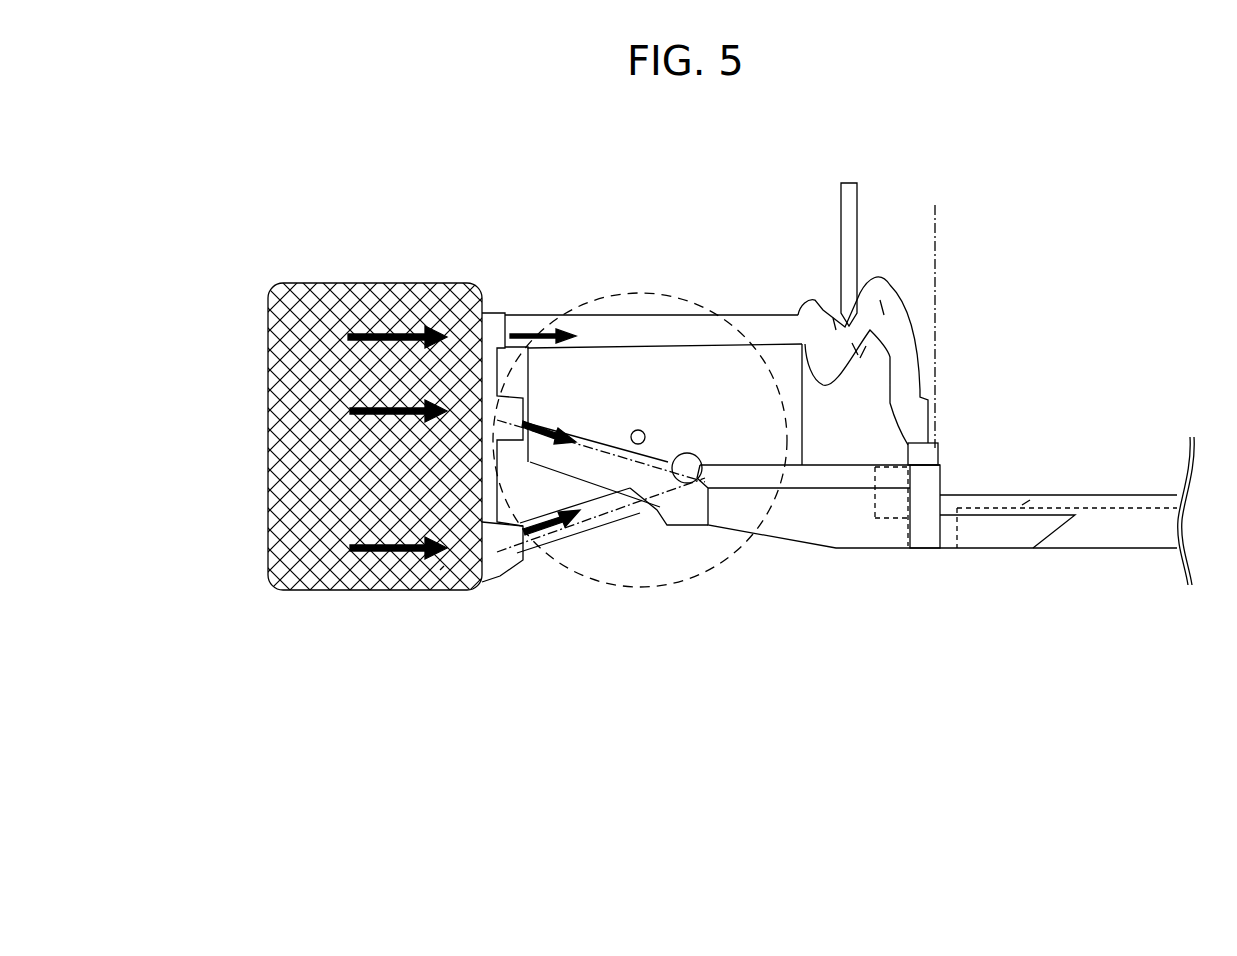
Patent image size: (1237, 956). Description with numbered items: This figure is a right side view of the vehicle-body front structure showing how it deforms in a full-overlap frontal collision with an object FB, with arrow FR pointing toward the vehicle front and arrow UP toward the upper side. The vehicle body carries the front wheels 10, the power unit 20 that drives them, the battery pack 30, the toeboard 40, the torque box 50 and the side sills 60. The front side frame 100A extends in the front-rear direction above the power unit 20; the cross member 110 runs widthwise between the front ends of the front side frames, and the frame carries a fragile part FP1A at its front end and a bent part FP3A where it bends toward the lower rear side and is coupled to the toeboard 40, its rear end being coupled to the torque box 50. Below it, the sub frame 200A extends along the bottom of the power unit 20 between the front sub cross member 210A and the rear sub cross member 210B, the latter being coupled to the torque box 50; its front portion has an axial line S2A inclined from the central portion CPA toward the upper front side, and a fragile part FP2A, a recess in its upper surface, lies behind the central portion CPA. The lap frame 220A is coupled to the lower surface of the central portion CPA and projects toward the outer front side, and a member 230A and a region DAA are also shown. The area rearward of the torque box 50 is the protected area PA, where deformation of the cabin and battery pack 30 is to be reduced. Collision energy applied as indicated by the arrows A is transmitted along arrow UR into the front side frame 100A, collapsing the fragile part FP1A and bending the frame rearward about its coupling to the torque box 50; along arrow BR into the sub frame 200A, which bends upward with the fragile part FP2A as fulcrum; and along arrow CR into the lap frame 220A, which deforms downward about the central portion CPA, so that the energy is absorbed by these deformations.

The front wheels 10 is at (670, 297).
The power unit 20 is at (728, 380).
The battery pack 30 is at (1136, 490).
The toeboard 40 is at (850, 209).
The torque box 50 is at (925, 450).
The side sills 60 is at (1022, 505).
The front side frame 100A is at (637, 333).
The cross member 110 is at (505, 305).
The sub frame 200A is at (620, 485).
The sub cross member 210A is at (447, 303).
The sub cross member 210B is at (893, 550).
The lap frame 220A is at (520, 565).
The support arm 230A is at (852, 522).
The fragile part FP1A is at (486, 312).
The fragile part FP2A is at (698, 513).
The bent part FP3A is at (817, 298).
The arrow UR is at (547, 314).
The arrow BR is at (568, 415).
The arrow CR is at (546, 558).
The central portion CPA is at (655, 548).
The protected area PA is at (937, 205).
The axial line S2A is at (395, 385).
The arrows A is at (372, 322).
The object FB is at (285, 572).
The deformation absorbing area DAA is at (440, 570).
The arrow UP is at (1195, 815).
The arrow FR is at (1195, 815).